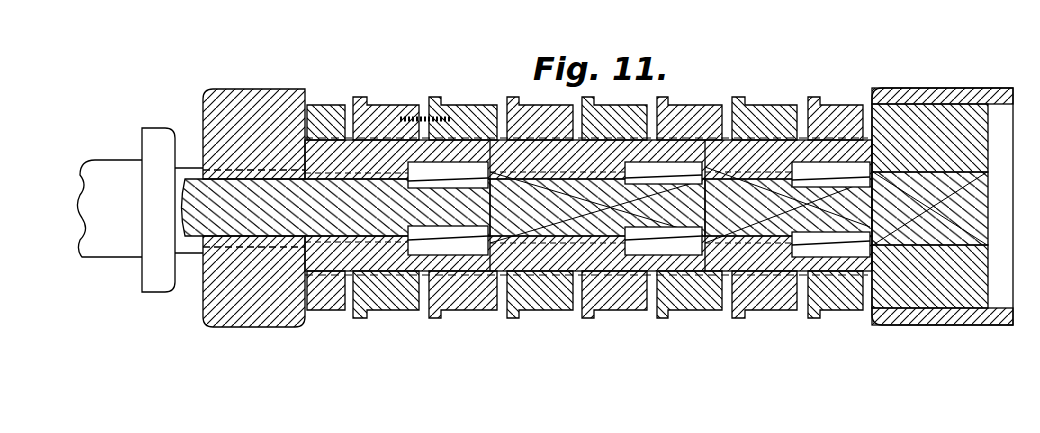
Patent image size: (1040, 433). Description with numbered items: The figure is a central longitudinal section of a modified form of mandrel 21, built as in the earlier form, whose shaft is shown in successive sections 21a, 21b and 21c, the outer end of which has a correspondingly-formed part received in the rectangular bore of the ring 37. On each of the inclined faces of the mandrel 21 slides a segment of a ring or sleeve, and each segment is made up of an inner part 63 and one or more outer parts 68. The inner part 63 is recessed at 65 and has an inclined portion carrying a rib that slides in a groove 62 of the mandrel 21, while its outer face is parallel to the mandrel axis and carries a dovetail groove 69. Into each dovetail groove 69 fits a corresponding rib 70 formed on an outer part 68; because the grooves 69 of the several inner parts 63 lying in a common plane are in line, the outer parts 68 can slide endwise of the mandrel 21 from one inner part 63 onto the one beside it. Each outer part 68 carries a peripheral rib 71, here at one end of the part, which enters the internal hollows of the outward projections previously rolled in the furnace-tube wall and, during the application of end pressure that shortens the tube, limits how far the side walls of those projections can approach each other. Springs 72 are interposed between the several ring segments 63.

The mandrel 21 is at (507, 210).
The shaft section 21a is at (336, 207).
The shaft section 21b is at (597, 207).
The shaft section 21c is at (788, 205).
The ring 37 is at (930, 138).
The groove 62 is at (683, 232).
The inner part 63 is at (555, 250).
The recess 65 is at (467, 243).
The outer part 68 is at (777, 297).
The dovetail groove 69 is at (731, 138).
The rib 70 is at (770, 138).
The peripheral rib 71 is at (663, 315).
The springs 72 is at (425, 115).